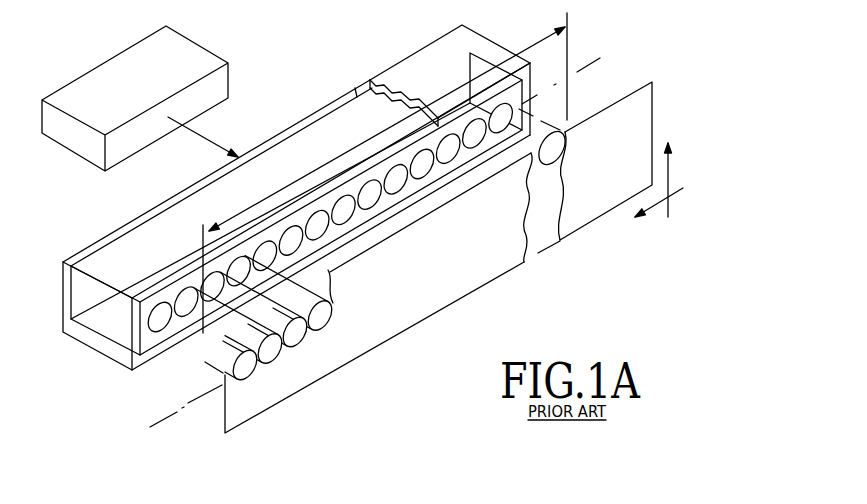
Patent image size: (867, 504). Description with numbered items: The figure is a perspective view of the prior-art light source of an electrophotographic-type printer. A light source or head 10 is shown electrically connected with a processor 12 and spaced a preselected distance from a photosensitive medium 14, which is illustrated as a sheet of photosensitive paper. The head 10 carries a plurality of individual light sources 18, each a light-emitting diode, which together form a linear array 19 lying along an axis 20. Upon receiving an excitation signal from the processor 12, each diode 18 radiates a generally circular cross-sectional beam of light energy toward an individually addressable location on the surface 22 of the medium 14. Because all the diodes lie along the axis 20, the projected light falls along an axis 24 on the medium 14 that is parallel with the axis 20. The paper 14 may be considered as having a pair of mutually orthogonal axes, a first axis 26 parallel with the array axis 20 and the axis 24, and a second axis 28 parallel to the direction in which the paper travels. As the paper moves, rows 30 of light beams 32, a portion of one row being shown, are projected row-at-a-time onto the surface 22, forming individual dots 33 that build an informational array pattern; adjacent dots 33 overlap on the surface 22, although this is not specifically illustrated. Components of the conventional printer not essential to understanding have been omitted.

The light source or head 10 is at (431, 57).
The processor 12 is at (200, 57).
The photosensitive medium 14 is at (384, 330).
The individual light sources 18 is at (149, 302).
The linear array 19 is at (397, 192).
The axis 20 is at (90, 362).
The surface 22 is at (618, 97).
The axis 24 is at (167, 417).
The first axis 26 is at (663, 207).
The second axis 28 is at (670, 177).
The rows 30 is at (242, 374).
The light beams 32 is at (205, 352).
The individual dots 33 is at (273, 347).
The length dimension A is at (353, 150).